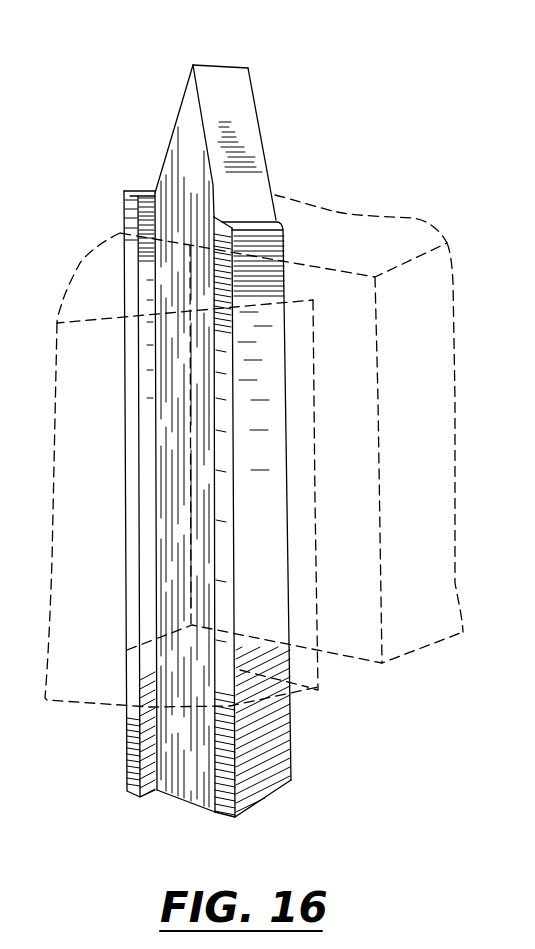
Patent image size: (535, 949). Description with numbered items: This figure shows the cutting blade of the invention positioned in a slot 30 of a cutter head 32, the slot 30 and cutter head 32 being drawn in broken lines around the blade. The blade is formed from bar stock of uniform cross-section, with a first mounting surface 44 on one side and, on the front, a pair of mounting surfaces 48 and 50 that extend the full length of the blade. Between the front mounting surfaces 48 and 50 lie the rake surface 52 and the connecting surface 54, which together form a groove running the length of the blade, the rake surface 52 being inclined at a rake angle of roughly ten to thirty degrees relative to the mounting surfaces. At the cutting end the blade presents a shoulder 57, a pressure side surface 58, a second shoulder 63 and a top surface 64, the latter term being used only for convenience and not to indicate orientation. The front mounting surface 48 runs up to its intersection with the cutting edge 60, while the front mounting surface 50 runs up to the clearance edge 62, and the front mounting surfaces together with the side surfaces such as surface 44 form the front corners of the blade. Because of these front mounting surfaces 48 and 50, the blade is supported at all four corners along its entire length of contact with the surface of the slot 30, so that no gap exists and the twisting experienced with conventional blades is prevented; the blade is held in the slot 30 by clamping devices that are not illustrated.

The slot 30 is at (347, 675).
The cutter head 32 is at (430, 312).
The first mounting surface 44 is at (270, 745).
The mounting surface 48 is at (225, 780).
The mounting surface 50 is at (128, 203).
The rake surface 52 is at (182, 776).
The connecting surface 54 is at (127, 228).
The shoulder 57 is at (258, 222).
The pressure side surface 58 is at (243, 136).
The cutting edge 60 is at (211, 112).
The clearance edge 62 is at (177, 112).
The shoulder 63 is at (151, 191).
The top surface 64 is at (209, 62).